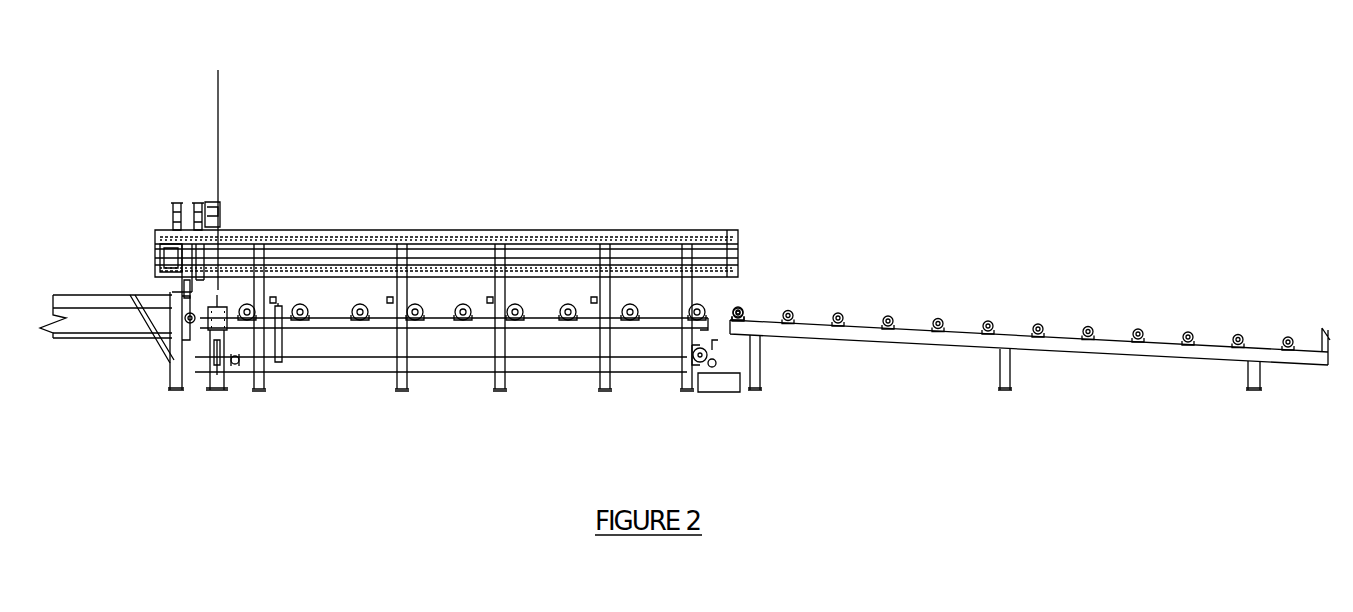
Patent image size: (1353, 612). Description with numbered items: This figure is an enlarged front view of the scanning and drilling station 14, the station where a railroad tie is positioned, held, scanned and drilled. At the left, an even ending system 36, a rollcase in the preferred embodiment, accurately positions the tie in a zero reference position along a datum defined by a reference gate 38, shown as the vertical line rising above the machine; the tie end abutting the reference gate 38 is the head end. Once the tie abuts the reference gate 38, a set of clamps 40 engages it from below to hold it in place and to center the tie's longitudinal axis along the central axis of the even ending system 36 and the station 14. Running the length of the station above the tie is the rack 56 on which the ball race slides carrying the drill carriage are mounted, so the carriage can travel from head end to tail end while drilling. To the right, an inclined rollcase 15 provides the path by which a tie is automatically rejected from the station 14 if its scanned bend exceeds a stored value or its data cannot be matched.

The scanning and drilling station 14 is at (400, 237).
The rollcase 15 is at (1090, 333).
The even ending system 36 is at (278, 310).
The reference gate 38 is at (218, 123).
The clamps 40 is at (218, 312).
The rack 56 is at (438, 237).